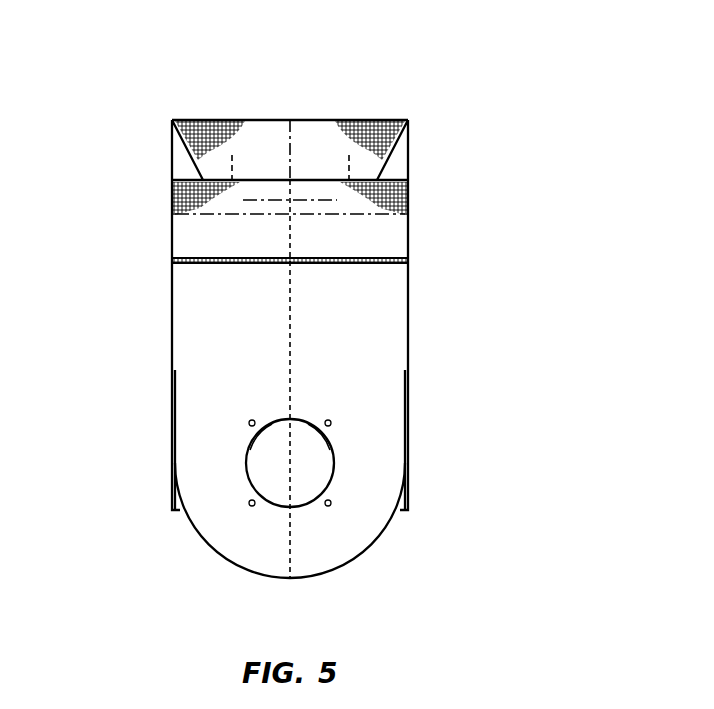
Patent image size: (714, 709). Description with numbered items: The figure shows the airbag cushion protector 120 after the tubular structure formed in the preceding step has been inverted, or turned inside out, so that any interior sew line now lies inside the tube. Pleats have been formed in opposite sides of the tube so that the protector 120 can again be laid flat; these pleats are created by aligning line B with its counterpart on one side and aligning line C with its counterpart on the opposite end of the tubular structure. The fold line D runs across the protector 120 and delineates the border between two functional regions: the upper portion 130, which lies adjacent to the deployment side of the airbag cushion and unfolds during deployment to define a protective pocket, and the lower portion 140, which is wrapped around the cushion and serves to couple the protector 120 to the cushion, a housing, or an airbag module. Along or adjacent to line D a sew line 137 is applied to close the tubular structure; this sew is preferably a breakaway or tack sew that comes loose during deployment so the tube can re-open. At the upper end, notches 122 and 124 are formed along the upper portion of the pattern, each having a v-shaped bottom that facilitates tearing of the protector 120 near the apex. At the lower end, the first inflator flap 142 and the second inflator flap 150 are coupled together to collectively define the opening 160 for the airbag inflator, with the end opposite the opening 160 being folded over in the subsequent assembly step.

The protector 120 is at (507, 122).
The notch 122 is at (403, 163).
The notch 124 is at (172, 162).
The upper portion 130 is at (160, 212).
The sew line 137 is at (360, 262).
The fold line D is at (392, 258).
The lower portion 140 is at (142, 492).
The first inflator flap 142 is at (363, 532).
The second inflator flap 150 is at (232, 535).
The opening 160 is at (318, 463).
The line B is at (172, 312).
The line C is at (408, 328).